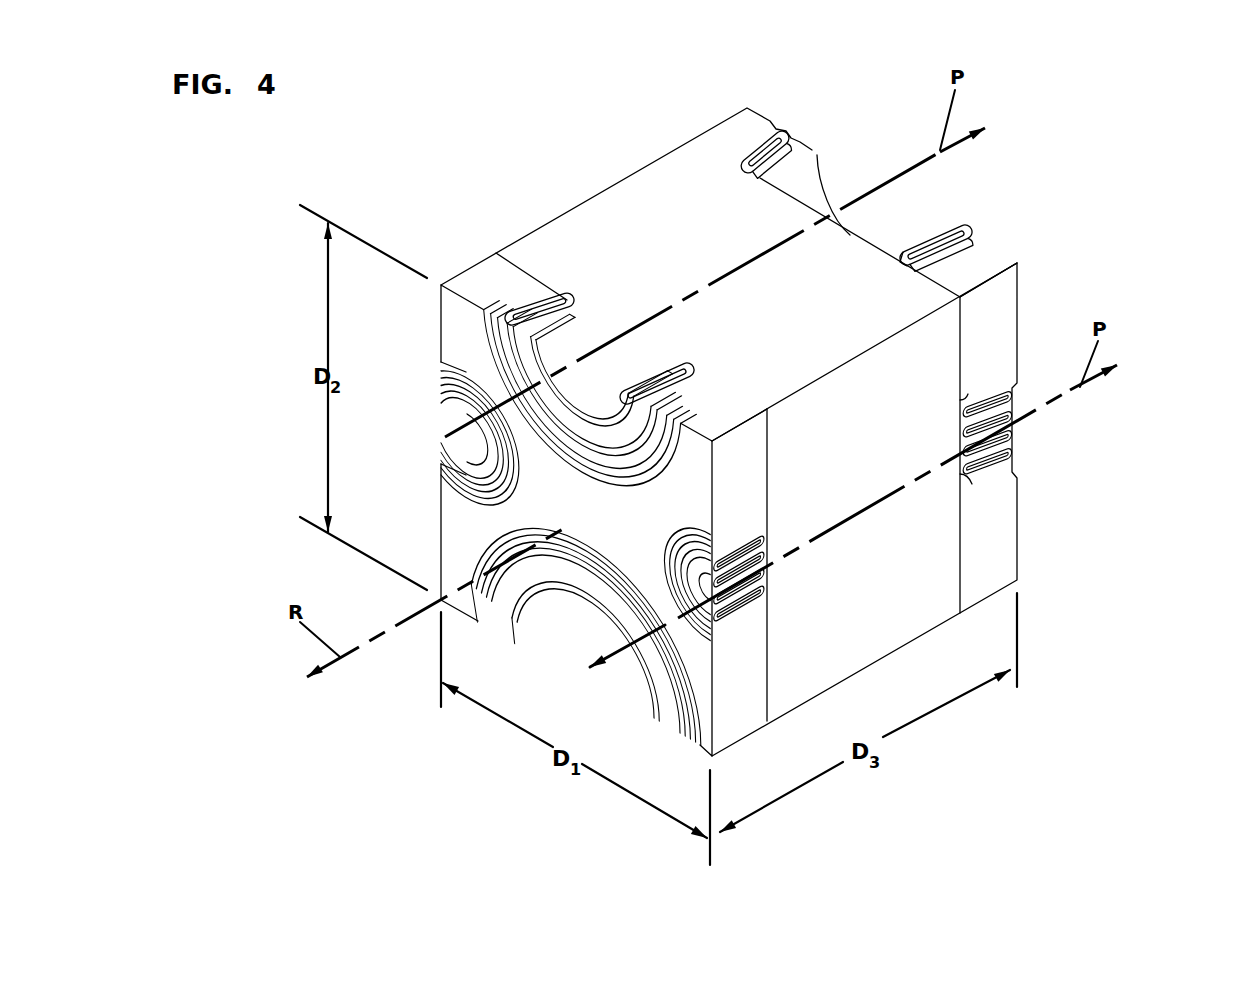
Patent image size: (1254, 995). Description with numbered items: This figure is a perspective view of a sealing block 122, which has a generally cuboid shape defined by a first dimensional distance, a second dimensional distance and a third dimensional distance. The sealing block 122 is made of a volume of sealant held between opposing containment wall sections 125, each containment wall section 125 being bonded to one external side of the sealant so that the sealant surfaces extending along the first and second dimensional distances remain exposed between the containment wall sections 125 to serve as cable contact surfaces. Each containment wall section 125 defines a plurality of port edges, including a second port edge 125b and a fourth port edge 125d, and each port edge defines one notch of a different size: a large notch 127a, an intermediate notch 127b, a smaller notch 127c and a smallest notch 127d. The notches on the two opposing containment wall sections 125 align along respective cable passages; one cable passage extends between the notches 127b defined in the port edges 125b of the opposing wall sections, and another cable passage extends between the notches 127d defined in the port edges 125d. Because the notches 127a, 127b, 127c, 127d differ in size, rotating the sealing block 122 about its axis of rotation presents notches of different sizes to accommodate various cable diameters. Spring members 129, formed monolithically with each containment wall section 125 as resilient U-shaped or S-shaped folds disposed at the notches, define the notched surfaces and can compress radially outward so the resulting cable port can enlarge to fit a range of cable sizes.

The sealing block 122 is at (540, 226).
The containment wall section 125 is at (689, 505).
The second port edge 125b is at (720, 410).
The fourth port edge 125d is at (765, 475).
The large notch 127a is at (540, 608).
The intermediate notch 127b is at (567, 333).
The smaller notch 127c is at (447, 438).
The smallest notch 127d is at (757, 572).
The spring member 129 is at (940, 250).